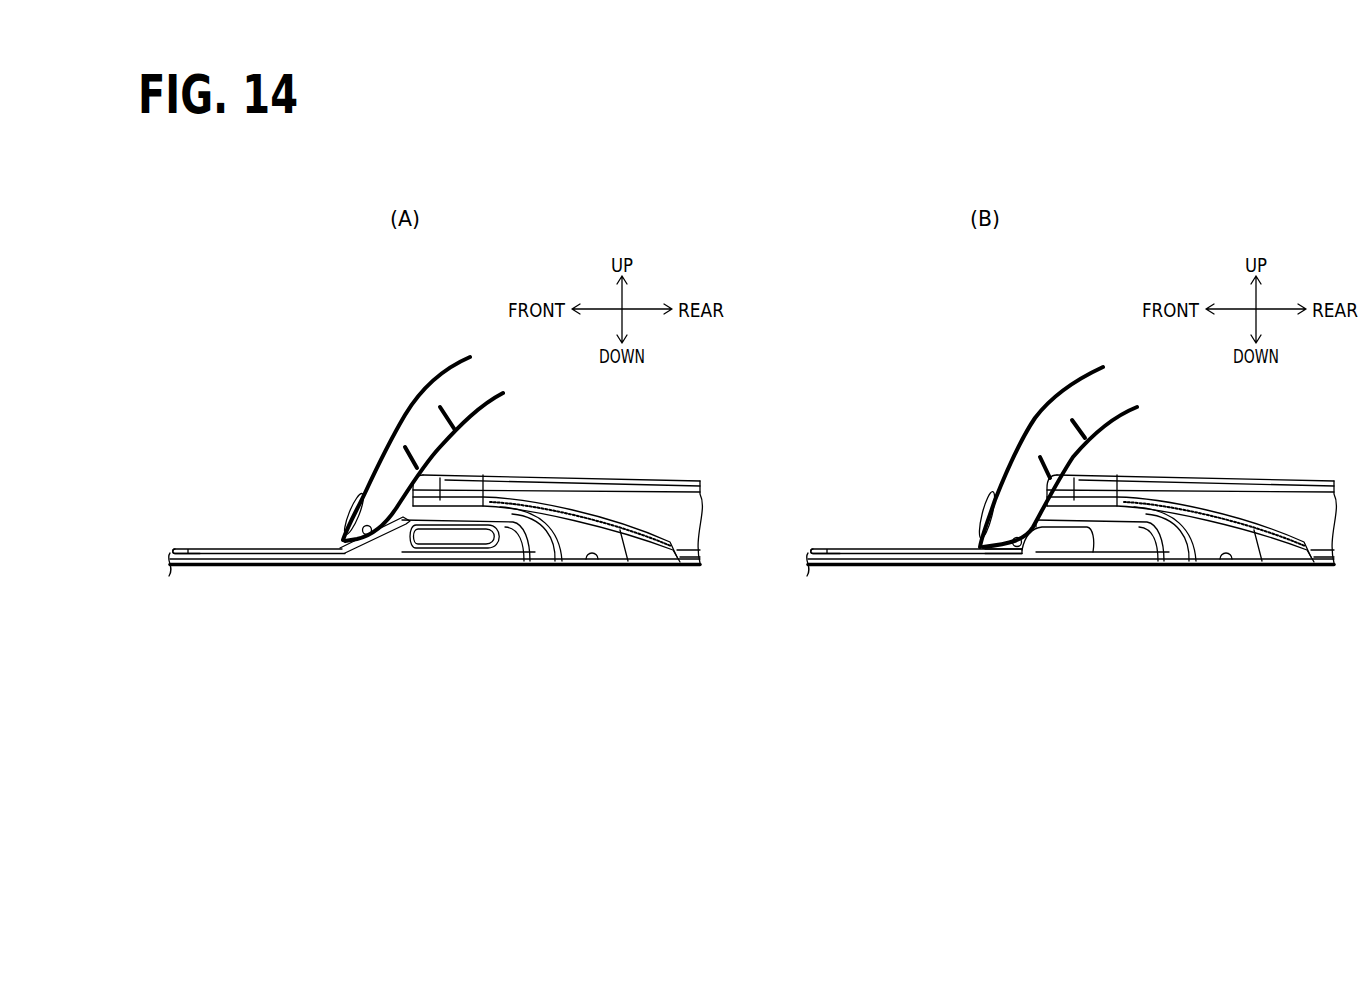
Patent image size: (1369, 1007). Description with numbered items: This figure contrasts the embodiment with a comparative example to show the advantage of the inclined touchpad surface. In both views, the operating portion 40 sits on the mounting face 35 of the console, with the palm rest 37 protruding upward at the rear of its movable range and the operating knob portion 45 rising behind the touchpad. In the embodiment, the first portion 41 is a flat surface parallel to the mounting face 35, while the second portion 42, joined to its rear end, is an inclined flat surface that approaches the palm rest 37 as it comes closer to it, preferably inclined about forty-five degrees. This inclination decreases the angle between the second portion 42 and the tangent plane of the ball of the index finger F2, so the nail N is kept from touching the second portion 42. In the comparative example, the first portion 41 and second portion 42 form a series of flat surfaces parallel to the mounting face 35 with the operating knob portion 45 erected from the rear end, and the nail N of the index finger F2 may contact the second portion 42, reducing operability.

The mounting face 35 is at (595, 564).
The palm rest 37 is at (557, 472).
The operating portion 40 is at (176, 537).
The first portion 41 is at (262, 548).
The second portion 42 is at (378, 536).
The operating knob portion 45 is at (445, 540).
The index finger F2 is at (385, 463).
The nail N is at (350, 513).